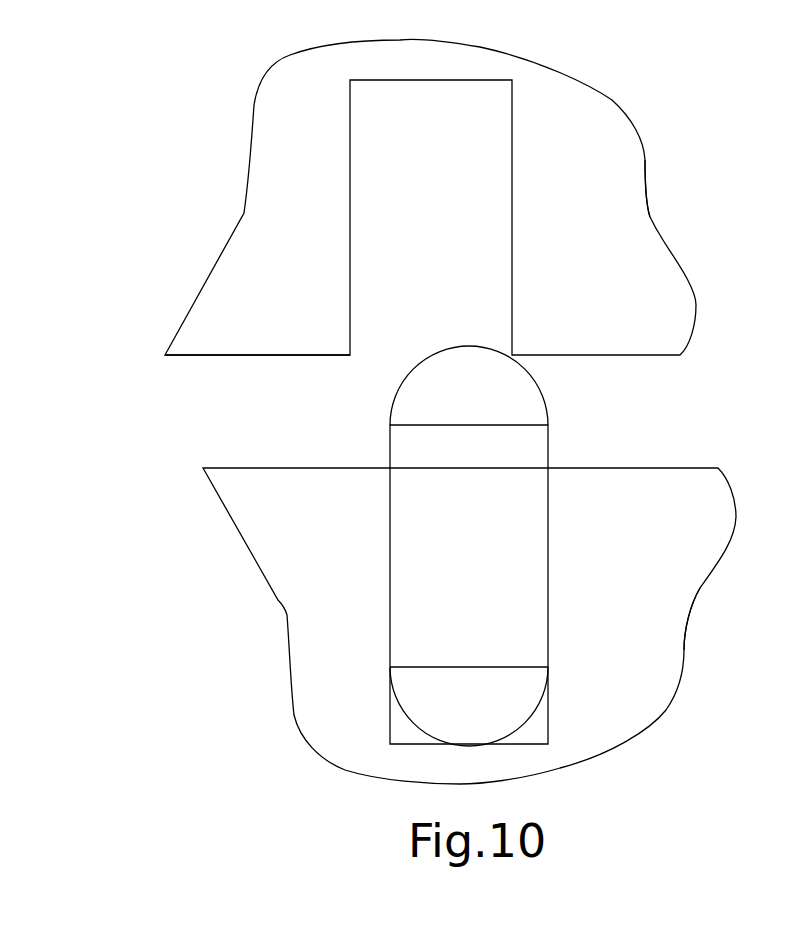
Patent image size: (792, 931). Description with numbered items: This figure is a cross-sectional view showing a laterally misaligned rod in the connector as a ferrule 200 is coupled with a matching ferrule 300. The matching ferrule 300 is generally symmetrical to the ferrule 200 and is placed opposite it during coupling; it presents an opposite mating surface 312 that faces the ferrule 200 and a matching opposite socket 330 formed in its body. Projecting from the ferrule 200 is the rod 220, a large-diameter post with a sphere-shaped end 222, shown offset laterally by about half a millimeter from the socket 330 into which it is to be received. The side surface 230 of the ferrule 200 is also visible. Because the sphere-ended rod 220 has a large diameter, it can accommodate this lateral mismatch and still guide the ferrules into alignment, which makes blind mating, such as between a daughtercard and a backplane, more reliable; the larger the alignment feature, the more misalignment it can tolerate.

The matching ferrule 300 is at (645, 100).
The matching opposite socket 330 is at (652, 216).
The opposite mating surface 312 is at (265, 360).
The ferrule 200 is at (647, 745).
The lower member side surface 230 is at (696, 598).
The rod 220 is at (550, 443).
The rounded tip of pin 222 is at (457, 345).